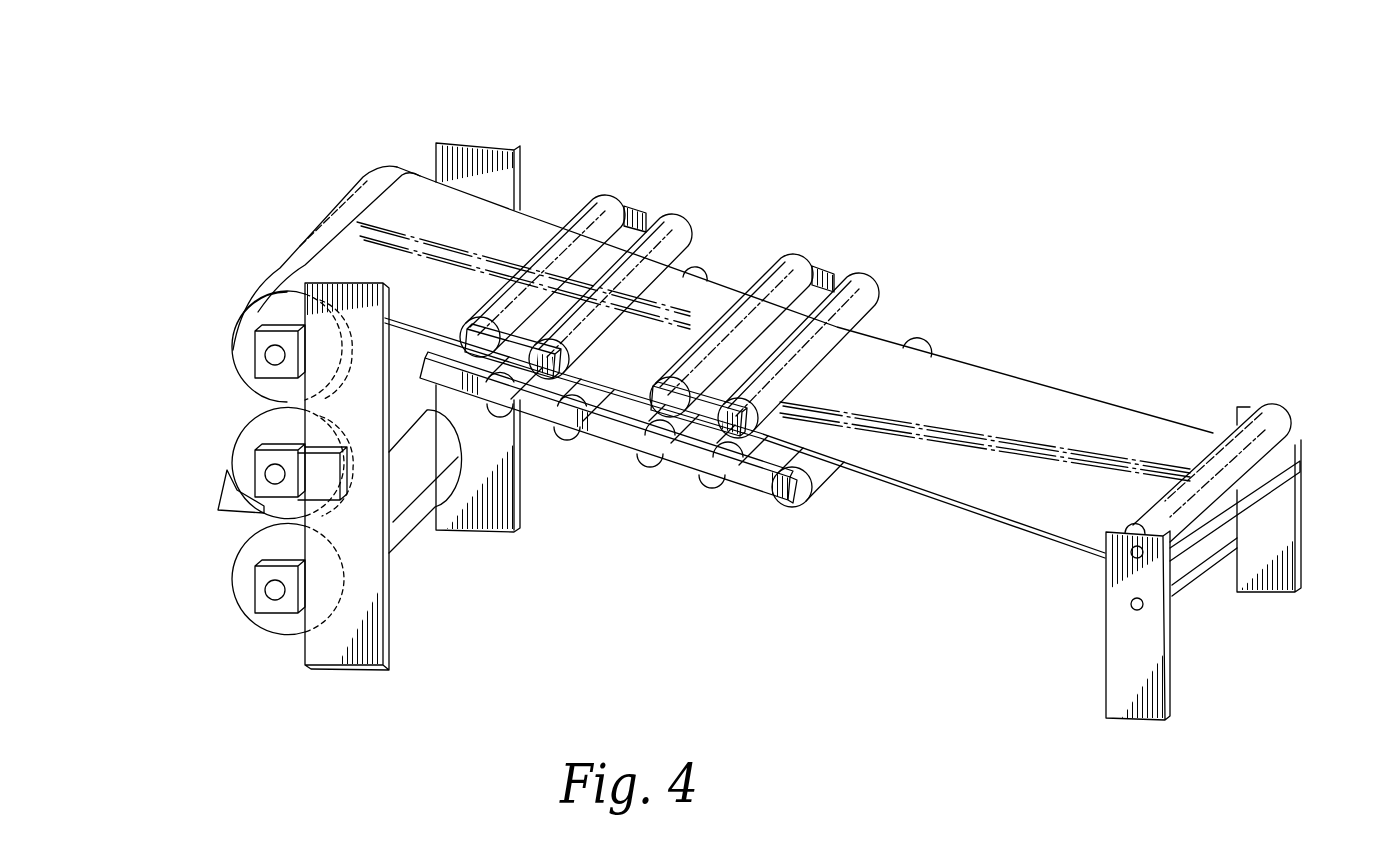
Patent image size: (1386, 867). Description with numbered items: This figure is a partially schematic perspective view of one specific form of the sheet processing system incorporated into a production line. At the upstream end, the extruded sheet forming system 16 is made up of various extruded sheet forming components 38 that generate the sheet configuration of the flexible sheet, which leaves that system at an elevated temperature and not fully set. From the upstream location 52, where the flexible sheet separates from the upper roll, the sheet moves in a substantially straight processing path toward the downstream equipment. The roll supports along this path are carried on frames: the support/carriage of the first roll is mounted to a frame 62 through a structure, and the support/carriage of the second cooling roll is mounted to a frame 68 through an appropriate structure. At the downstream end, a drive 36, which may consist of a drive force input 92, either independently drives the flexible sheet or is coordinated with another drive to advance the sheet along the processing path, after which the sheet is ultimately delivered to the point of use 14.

The extruded sheet forming components 38 is at (227, 470).
The extruded sheet forming system 16 is at (350, 166).
The upstream location 52 is at (552, 200).
The frame 62 is at (565, 668).
The frame 68 is at (565, 415).
The drive 36 is at (1182, 416).
The drive force input 92 is at (1200, 502).
The point of use 14 is at (1200, 545).